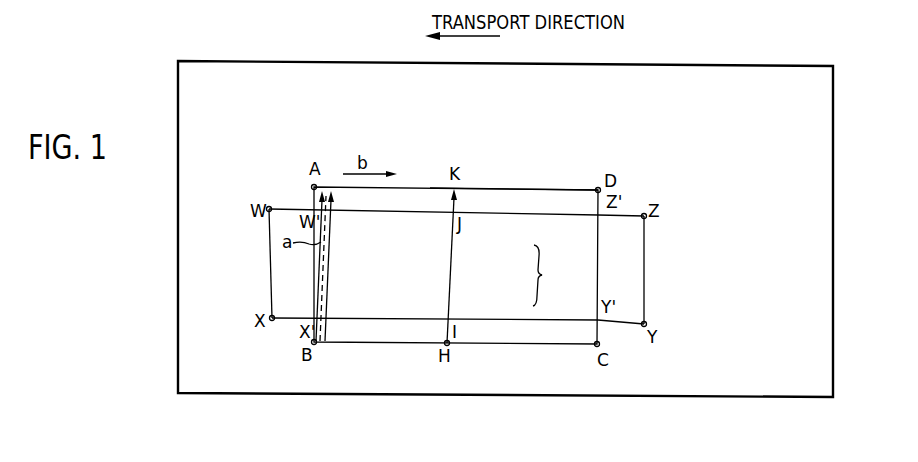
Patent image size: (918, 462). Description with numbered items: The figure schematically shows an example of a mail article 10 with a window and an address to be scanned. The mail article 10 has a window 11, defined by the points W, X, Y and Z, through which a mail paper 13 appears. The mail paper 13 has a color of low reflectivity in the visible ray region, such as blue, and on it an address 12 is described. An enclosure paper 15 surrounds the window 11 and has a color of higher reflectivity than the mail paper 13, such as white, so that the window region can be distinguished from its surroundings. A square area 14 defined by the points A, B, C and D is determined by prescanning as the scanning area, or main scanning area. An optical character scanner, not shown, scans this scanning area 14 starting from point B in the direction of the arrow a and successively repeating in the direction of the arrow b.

The mail article 10 is at (688, 65).
The window 11 is at (268, 259).
The address 12 is at (544, 273).
The mail paper 13 is at (637, 293).
The scanning area 14 is at (510, 188).
The enclosure paper 15 is at (514, 166).